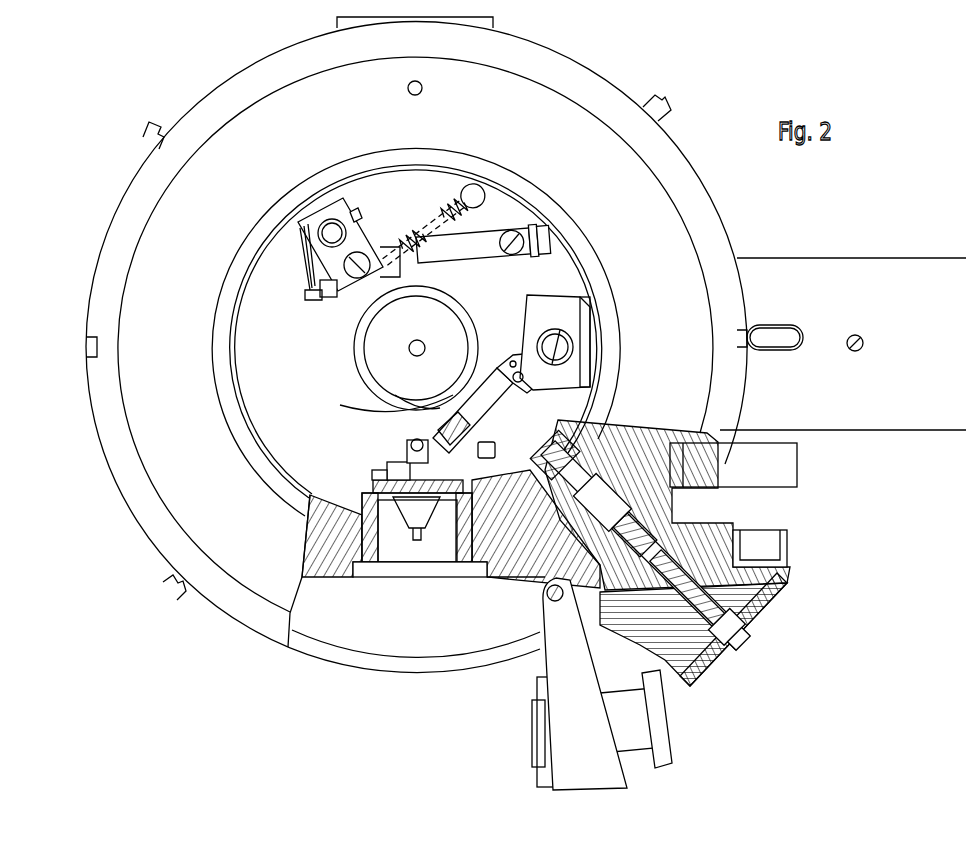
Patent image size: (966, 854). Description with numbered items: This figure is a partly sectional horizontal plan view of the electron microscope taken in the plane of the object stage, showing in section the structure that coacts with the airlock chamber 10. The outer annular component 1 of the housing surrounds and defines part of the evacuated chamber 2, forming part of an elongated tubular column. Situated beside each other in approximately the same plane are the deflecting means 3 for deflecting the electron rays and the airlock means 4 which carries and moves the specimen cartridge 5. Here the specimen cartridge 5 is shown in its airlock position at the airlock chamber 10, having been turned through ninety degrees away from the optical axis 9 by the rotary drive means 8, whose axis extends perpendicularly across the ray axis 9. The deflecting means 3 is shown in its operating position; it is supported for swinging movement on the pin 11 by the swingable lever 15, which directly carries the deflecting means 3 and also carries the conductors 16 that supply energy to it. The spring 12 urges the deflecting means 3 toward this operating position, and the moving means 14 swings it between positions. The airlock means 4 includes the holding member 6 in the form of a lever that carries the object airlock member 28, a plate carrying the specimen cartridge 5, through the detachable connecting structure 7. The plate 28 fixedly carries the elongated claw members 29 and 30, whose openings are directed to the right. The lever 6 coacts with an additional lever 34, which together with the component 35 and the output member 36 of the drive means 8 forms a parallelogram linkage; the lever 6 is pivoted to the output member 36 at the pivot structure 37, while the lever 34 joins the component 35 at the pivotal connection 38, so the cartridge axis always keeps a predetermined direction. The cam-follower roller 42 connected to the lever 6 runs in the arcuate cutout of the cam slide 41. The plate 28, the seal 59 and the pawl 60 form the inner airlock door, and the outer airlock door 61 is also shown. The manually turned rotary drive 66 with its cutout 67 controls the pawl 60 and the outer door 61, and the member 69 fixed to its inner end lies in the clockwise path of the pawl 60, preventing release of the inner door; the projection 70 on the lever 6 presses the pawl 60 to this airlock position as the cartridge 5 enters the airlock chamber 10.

The outer annular component 1 is at (252, 105).
The evacuated chamber 2 is at (262, 318).
The deflecting means 3 is at (393, 348).
The airlock means 4 is at (497, 370).
The specimen cartridge 5 is at (420, 548).
The holding member 6 is at (378, 403).
The detachable connecting structure 7 is at (461, 553).
The rotary drive means 8 is at (928, 422).
The optical axis 9 is at (410, 348).
The airlock chamber 10 is at (290, 613).
The pin 11 is at (268, 192).
The spring 12 is at (433, 226).
The moving means 14 is at (478, 243).
The swingable lever 15 is at (362, 247).
The conductors 16 is at (293, 272).
The object airlock member 28 is at (302, 576).
The claw member 29 is at (400, 470).
The claw member 30 is at (405, 467).
The additional lever 34 is at (513, 361).
The component 35 is at (443, 498).
The output member 36 is at (590, 338).
The pivot structure 37 is at (575, 335).
The pivotal connection 38 is at (412, 442).
The cam slide 41 is at (626, 300).
The cam-follower roller 42 is at (519, 383).
The seal 59 is at (352, 527).
The pawl 60 is at (482, 520).
The outer airlock door 61 is at (573, 742).
The rotary drive 66 is at (733, 535).
The cutout 67 is at (607, 612).
The member 69 is at (537, 450).
The projection 70 is at (483, 432).